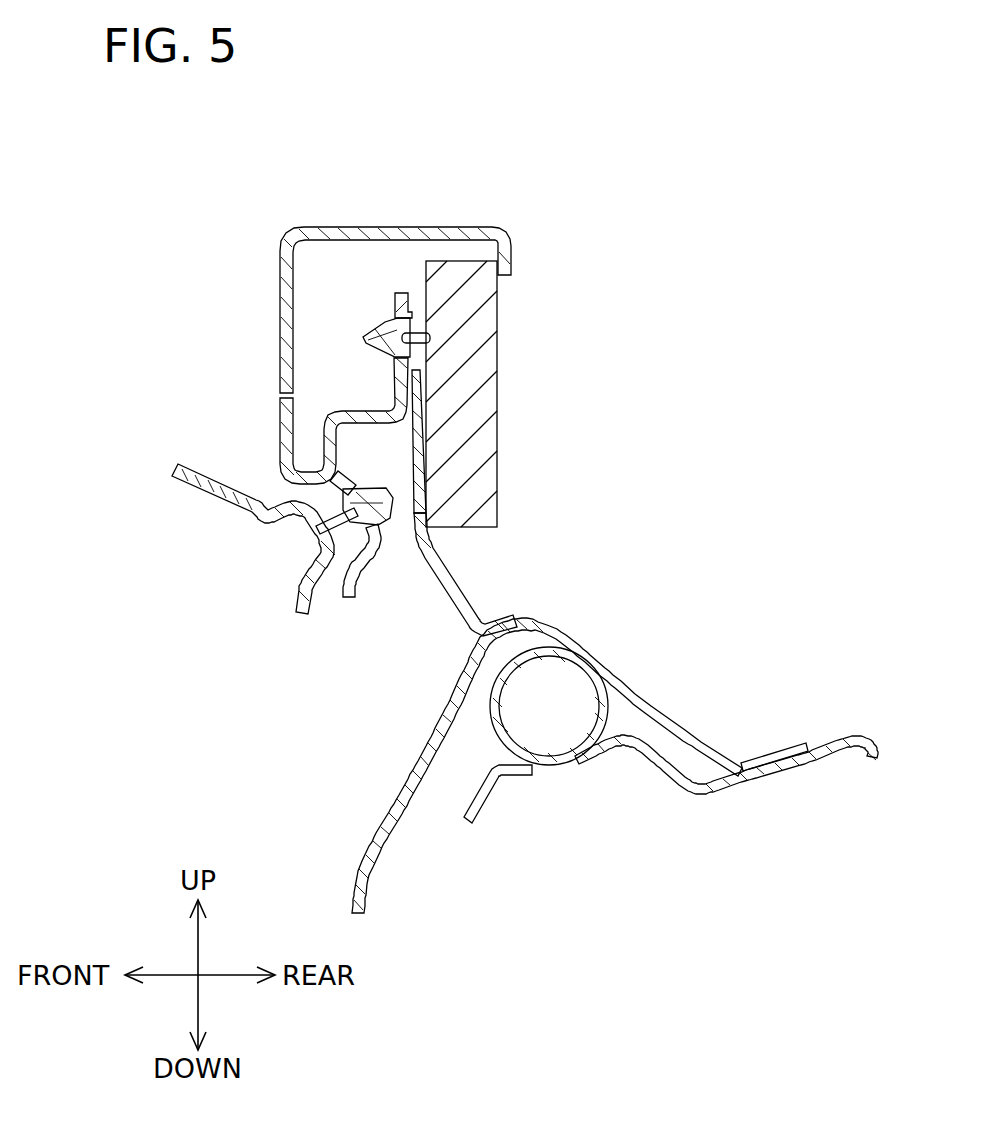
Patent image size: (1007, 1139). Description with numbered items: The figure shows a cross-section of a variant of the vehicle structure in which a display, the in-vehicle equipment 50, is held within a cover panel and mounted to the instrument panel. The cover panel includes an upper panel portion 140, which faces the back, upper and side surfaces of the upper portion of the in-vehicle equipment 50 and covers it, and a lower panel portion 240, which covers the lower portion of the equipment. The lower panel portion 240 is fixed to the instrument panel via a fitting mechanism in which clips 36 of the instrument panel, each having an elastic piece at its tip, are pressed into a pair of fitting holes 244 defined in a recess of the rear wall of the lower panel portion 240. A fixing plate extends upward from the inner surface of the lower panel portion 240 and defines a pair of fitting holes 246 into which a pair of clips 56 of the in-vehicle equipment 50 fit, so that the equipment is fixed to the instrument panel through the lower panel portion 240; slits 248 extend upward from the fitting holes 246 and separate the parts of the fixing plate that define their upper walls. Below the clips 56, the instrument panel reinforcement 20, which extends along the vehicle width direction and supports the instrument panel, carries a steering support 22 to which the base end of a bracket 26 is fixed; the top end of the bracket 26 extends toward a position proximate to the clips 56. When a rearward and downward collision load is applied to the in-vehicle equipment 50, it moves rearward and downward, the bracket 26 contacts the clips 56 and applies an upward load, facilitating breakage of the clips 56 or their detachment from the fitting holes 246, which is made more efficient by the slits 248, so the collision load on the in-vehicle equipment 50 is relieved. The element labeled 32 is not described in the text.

The upper panel portion 140 is at (285, 252).
The fitting holes 246 is at (380, 328).
The clips 56 is at (362, 339).
The slits 248 is at (393, 408).
The lower panel portion 240 is at (283, 428).
The in-vehicle equipment 50 is at (485, 444).
The panel 32 is at (195, 489).
The clips 36 is at (327, 502).
The fitting holes 244 is at (302, 537).
The bracket 26 is at (458, 592).
The steering support 22 is at (665, 713).
The instrument panel reinforcement 20 is at (558, 766).